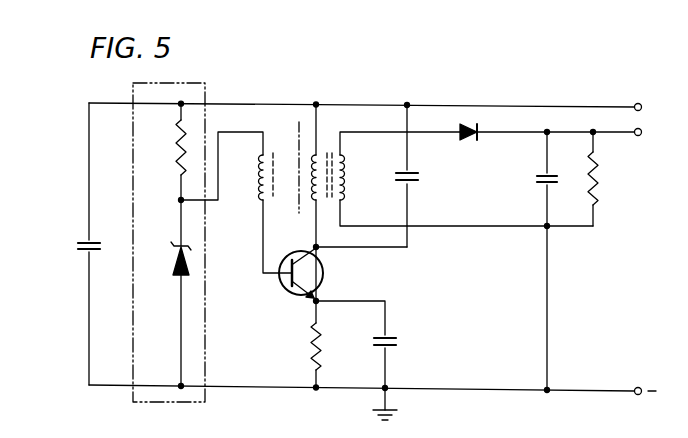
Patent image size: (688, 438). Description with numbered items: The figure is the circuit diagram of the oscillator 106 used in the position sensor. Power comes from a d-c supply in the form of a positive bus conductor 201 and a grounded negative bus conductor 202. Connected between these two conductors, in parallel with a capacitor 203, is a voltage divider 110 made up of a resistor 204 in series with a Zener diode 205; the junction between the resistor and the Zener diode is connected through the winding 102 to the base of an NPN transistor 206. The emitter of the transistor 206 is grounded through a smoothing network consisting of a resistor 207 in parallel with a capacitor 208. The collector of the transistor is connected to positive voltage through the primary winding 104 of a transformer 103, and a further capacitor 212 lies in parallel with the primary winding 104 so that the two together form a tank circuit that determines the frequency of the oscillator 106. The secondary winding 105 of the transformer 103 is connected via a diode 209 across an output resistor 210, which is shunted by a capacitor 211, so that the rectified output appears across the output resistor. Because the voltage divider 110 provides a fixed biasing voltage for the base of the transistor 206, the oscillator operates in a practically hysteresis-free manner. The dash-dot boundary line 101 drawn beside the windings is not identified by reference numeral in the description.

The transformer core / boundary line 101 is at (297, 140).
The winding 102 is at (258, 176).
The transformer 103 is at (330, 142).
The primary winding 104 is at (312, 196).
The secondary winding 105 is at (348, 166).
The oscillator 106 is at (359, 93).
The voltage divider 110 is at (202, 404).
The positive bus conductor 201 is at (505, 105).
The negative bus conductor 202 is at (585, 391).
The capacitor 203 is at (76, 244).
The resistor 204 is at (176, 156).
The Zener diode 205 is at (176, 258).
The NPN transistor 206 is at (324, 272).
The resistor 207 is at (308, 344).
The capacitor 208 is at (398, 344).
The diode 209 is at (468, 142).
The output resistor 210 is at (598, 170).
The capacitor 211 is at (537, 185).
The capacitor 212 is at (420, 178).